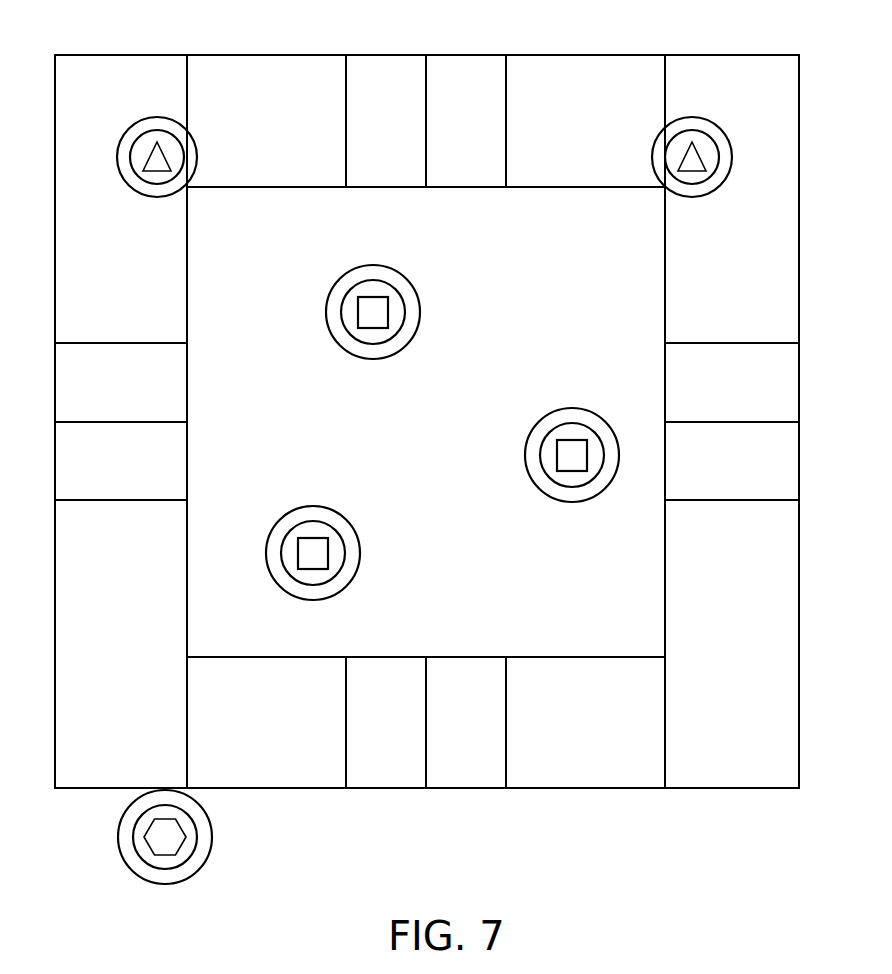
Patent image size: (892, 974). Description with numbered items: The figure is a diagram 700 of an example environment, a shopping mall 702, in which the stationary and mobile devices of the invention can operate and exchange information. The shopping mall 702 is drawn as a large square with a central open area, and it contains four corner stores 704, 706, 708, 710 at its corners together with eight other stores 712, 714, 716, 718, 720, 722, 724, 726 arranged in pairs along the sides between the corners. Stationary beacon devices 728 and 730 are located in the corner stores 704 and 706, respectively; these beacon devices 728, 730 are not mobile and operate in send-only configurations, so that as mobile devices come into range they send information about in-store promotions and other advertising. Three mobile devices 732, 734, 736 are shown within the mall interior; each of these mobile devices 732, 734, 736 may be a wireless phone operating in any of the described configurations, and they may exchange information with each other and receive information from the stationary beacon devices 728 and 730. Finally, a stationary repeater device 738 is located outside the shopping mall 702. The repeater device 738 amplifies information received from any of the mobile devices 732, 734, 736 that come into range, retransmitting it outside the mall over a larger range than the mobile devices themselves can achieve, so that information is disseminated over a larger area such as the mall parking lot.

The diagram 700 is at (557, 867).
The shopping mall 702 is at (552, 55).
The corner store 704 is at (72, 96).
The corner store 706 is at (750, 96).
The corner store 708 is at (750, 776).
The corner store 710 is at (72, 776).
The store 712 is at (368, 126).
The store 714 is at (446, 126).
The store 716 is at (712, 387).
The store 718 is at (712, 471).
The store 720 is at (445, 739).
The store 722 is at (367, 739).
The store 724 is at (98, 471).
The store 726 is at (98, 387).
The stationary beacon device 728 is at (157, 196).
The stationary beacon device 730 is at (672, 124).
The mobile device 732 is at (371, 264).
The mobile device 734 is at (311, 506).
The mobile device 736 is at (573, 408).
The stationary repeater device 738 is at (213, 835).